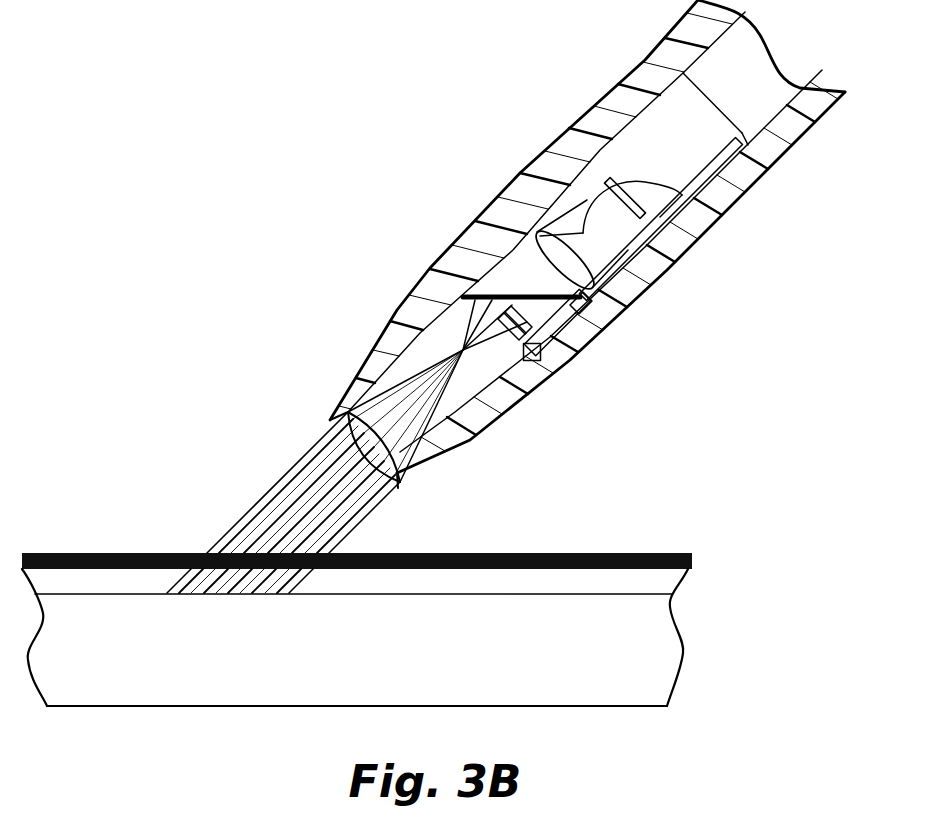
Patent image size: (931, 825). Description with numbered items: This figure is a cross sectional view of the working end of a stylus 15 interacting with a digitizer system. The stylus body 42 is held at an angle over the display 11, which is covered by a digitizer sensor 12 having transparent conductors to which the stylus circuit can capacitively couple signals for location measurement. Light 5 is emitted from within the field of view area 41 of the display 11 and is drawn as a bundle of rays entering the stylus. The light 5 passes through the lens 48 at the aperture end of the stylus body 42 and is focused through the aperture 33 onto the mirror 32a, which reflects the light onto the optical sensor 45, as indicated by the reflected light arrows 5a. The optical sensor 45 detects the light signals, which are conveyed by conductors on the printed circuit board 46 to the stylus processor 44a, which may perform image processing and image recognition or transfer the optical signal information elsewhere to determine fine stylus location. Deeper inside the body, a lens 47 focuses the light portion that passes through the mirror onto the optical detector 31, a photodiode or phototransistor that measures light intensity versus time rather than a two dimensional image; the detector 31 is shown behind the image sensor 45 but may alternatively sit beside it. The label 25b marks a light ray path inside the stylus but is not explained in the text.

The stylus body 42 is at (648, 62).
The lens 47 is at (460, 403).
The inner tube end 25b is at (527, 277).
The stylus processor 44a is at (707, 165).
The optical detector 31 is at (628, 222).
The optical sensor 45 is at (530, 340).
The printed circuit board 46 is at (577, 307).
The mirror 32a is at (490, 325).
The reflected light arrows 5a is at (527, 314).
The aperture 33 is at (463, 351).
The lens 48 is at (400, 474).
The light 5 is at (283, 515).
The digitizer sensor 12 is at (138, 553).
The display 11 is at (148, 672).
The field of view (FOV) area 41 is at (283, 602).
The stylus 15 is at (500, 95).